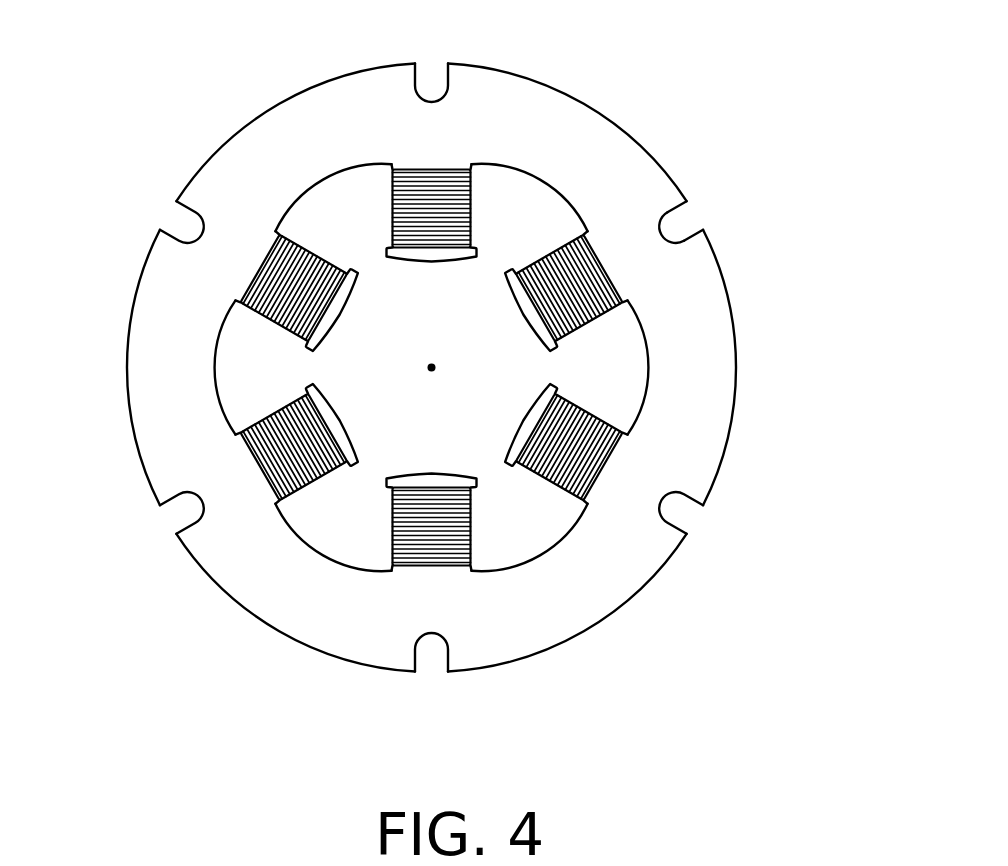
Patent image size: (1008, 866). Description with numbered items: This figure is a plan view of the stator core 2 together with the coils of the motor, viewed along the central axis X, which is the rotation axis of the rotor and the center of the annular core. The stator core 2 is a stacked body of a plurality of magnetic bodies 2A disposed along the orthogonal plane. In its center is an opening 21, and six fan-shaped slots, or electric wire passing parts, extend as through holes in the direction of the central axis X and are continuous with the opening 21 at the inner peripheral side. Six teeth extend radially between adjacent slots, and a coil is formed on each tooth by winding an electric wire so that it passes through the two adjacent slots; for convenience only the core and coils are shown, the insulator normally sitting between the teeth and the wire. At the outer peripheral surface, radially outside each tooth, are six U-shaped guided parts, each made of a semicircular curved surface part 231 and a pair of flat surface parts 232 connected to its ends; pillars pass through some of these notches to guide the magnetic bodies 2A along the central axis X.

The stator core 2 is at (640, 168).
The magnetic body 2A is at (712, 419).
The opening 21 is at (452, 326).
The curved surface part 231 is at (663, 226).
The flat surface part 232 is at (685, 204).
The central axis X is at (436, 369).